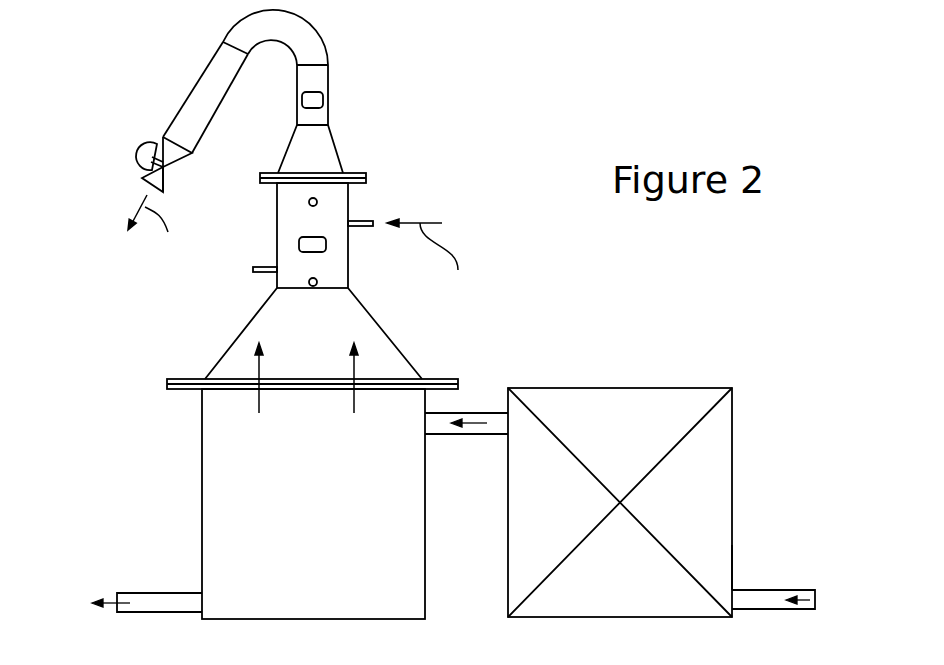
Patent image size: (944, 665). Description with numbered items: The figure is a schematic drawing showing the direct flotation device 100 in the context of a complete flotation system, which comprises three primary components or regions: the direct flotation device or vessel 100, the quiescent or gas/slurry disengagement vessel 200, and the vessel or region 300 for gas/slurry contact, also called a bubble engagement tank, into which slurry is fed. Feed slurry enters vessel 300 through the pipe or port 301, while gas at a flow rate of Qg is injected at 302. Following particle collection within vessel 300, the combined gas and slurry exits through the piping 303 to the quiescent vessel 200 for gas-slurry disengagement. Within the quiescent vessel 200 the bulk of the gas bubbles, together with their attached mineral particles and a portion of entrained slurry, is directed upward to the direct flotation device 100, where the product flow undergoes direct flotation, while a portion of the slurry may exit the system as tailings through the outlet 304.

The direct flotation device 100 is at (96, 3).
The quiescent vessel 200 is at (277, 487).
The gas/slurry contact vessel 300 is at (649, 412).
The pipe or port 301 is at (816, 598).
The gas injection point 302 is at (761, 580).
The piping 303 is at (487, 412).
The outlet 304 is at (113, 598).